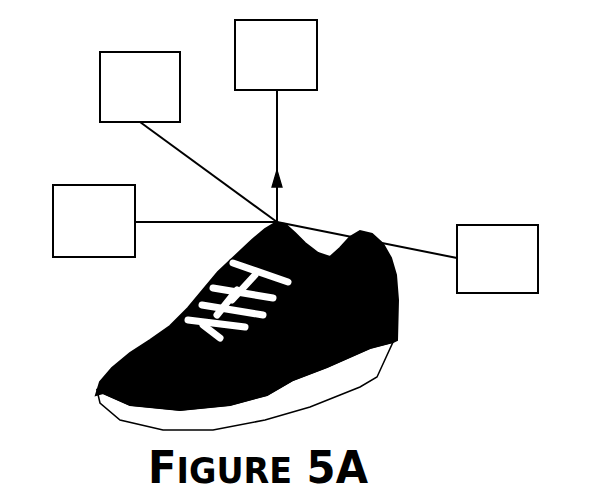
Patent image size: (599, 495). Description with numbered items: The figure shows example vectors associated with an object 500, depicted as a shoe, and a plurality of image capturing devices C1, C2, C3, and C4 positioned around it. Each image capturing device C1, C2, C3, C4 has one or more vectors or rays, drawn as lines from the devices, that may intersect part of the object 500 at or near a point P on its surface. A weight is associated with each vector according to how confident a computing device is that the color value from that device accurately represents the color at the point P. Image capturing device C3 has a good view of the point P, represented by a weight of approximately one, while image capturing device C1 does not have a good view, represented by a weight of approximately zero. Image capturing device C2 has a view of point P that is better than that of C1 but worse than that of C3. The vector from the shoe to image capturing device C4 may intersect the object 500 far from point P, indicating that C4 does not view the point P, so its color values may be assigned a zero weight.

The object 500 is at (90, 361).
The point P is at (287, 210).
The image capturing device C1 is at (80, 232).
The image capturing device C2 is at (126, 99).
The image capturing device C3 is at (262, 67).
The image capturing device C4 is at (483, 271).